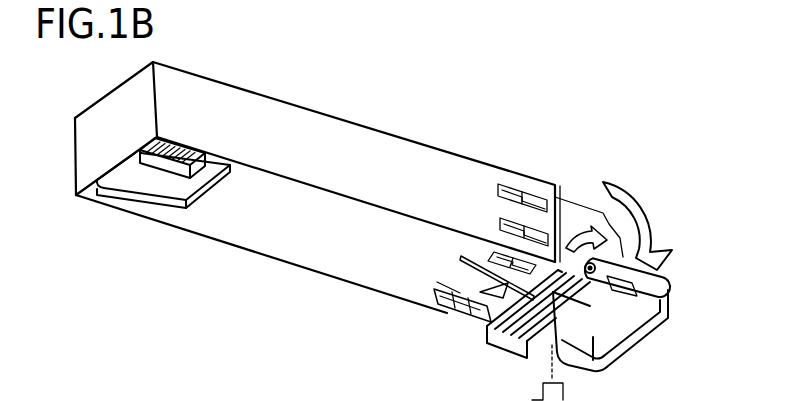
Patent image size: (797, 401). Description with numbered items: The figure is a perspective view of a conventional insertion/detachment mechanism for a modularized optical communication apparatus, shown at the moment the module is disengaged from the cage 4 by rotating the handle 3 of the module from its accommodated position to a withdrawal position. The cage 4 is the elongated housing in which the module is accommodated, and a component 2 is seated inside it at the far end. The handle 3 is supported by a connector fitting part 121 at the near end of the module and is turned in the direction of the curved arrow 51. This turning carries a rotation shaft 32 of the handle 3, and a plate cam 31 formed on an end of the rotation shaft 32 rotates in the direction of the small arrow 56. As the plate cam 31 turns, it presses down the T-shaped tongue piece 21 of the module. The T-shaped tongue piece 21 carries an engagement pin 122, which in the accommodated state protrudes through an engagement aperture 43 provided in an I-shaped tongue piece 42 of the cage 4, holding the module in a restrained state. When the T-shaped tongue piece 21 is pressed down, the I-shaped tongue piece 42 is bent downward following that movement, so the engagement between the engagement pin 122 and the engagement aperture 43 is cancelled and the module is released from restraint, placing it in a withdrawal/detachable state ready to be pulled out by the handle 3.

The cage 4 is at (369, 146).
The card 2 is at (163, 200).
The arrow 56 is at (580, 240).
The arrow 51 is at (647, 225).
The connector fitting part 121 is at (618, 253).
The rotation shaft 32 is at (657, 280).
The plate cam 31 is at (615, 291).
The handle 3 is at (622, 338).
The T-shaped tongue piece 21 is at (503, 333).
The engagement aperture 43 is at (468, 318).
The I-shaped tongue piece 42 is at (457, 280).
The engagement pin 122 is at (440, 317).